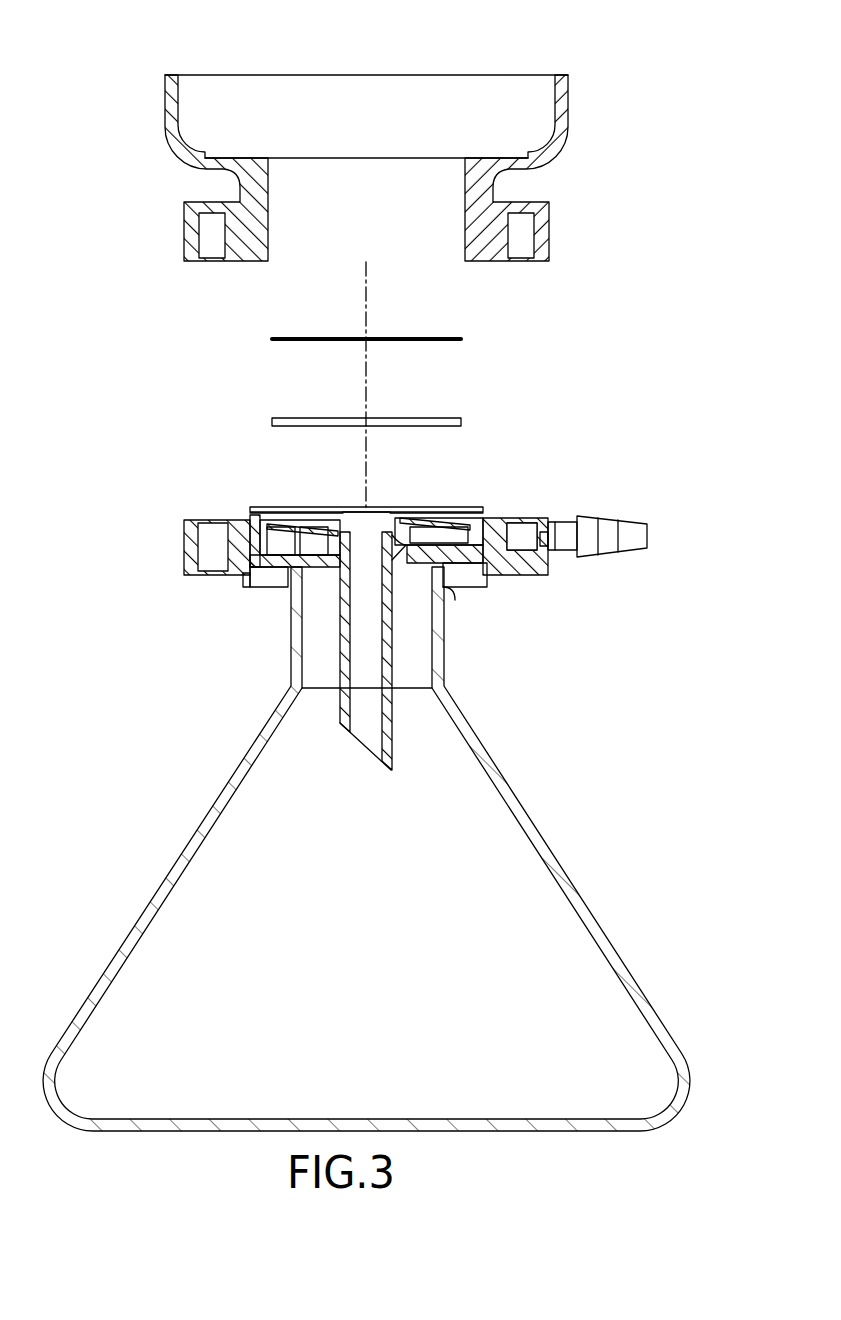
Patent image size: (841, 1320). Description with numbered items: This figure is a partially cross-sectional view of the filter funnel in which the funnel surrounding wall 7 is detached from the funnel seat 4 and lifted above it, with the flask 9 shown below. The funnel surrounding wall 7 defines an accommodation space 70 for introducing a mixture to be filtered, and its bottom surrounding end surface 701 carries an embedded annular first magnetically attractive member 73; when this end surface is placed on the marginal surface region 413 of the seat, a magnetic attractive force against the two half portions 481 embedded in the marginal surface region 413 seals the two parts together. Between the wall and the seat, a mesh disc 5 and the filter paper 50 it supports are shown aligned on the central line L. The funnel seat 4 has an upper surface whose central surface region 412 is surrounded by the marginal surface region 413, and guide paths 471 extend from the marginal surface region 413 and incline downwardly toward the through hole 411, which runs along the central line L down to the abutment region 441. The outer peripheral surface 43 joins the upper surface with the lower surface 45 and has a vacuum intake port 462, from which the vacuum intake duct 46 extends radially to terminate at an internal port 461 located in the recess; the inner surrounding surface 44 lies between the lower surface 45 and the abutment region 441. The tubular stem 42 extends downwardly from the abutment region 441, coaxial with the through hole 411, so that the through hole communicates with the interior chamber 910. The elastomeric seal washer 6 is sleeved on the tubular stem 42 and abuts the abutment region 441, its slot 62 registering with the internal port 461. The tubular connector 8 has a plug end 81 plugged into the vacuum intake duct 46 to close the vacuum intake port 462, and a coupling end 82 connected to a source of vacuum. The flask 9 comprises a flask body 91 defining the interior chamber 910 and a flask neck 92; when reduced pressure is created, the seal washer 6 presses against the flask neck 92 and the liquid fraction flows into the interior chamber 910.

The funnel surrounding wall 7 is at (393, 163).
The accommodation space 70 is at (268, 125).
The first magnetically attractive member 73 is at (210, 223).
The bottom surrounding end surface 701 is at (520, 261).
The central line L is at (363, 296).
The filter paper 50 is at (462, 339).
The mesh disc 5 is at (462, 422).
The funnel seat 4 is at (358, 604).
The marginal surface region 413 is at (198, 520).
The central surface region 412 is at (312, 510).
The through hole 411 is at (342, 528).
The outer peripheral surface 43 is at (330, 582).
The half portions 481 is at (212, 560).
The lower surface 45 is at (207, 578).
The inner surrounding surface 44 is at (248, 587).
The vacuum intake duct 46 is at (490, 537).
The internal port 461 is at (358, 540).
The guide paths 471 is at (418, 515).
The abutment region 441 is at (455, 540).
The vacuum intake port 462 is at (568, 545).
The seal washer 6 is at (465, 585).
The slot 62 is at (400, 572).
The tubular stem 42 is at (393, 708).
The tubular connector 8 is at (620, 518).
The plug end 81 is at (540, 520).
The coupling end 82 is at (638, 545).
The flask 9 is at (366, 849).
The flask body 91 is at (500, 765).
The flask neck 92 is at (292, 670).
The interior chamber 910 is at (540, 918).